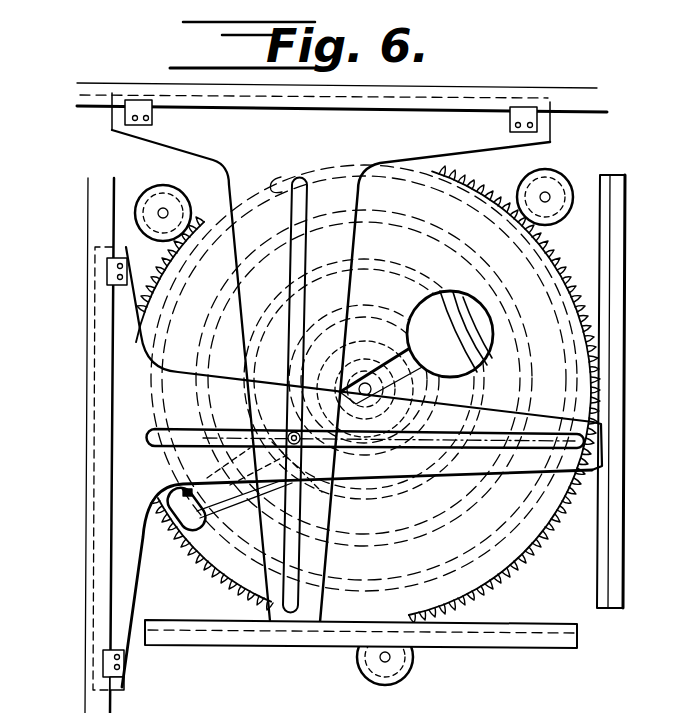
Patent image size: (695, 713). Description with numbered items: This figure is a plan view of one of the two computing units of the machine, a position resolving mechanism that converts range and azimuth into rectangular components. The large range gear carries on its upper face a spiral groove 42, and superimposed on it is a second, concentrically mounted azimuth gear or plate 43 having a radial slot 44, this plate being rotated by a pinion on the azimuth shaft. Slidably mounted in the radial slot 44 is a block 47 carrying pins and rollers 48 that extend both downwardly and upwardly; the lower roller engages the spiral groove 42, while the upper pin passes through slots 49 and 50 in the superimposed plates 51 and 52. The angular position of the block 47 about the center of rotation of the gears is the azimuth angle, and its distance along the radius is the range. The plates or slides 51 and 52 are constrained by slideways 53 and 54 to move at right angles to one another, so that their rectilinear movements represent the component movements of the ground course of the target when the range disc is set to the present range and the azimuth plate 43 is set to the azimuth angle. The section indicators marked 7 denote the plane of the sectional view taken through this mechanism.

The section line 7- 7 is at (385, 411).
The spiral groove 42 is at (472, 210).
The azimuth gear or plate 43 is at (577, 320).
The radial slot 44 is at (416, 347).
The block 47 is at (318, 441).
The pins and rollers 48 is at (285, 425).
The slot 49 is at (458, 470).
The slot 50 is at (296, 550).
The plate 51 is at (342, 111).
The plate 52 is at (121, 445).
The slideway 53 is at (92, 236).
The slideway 54 is at (572, 108).